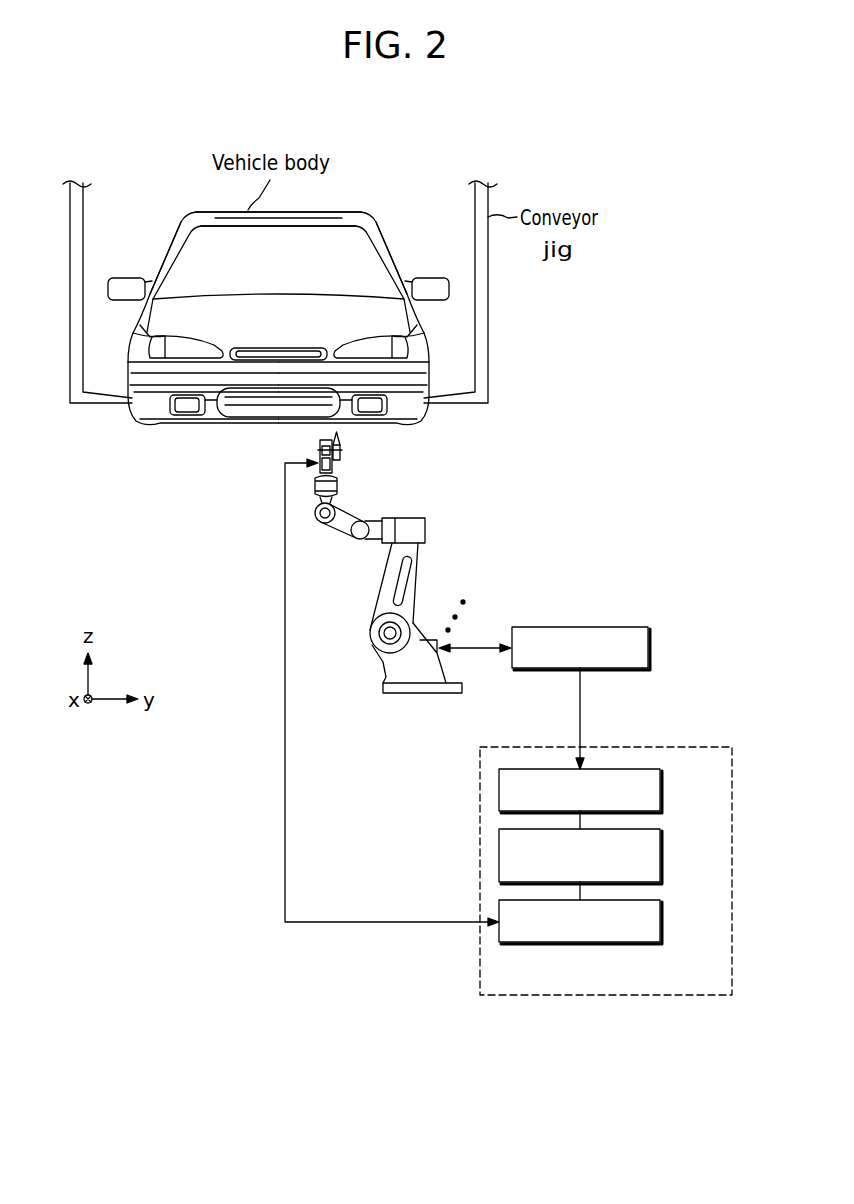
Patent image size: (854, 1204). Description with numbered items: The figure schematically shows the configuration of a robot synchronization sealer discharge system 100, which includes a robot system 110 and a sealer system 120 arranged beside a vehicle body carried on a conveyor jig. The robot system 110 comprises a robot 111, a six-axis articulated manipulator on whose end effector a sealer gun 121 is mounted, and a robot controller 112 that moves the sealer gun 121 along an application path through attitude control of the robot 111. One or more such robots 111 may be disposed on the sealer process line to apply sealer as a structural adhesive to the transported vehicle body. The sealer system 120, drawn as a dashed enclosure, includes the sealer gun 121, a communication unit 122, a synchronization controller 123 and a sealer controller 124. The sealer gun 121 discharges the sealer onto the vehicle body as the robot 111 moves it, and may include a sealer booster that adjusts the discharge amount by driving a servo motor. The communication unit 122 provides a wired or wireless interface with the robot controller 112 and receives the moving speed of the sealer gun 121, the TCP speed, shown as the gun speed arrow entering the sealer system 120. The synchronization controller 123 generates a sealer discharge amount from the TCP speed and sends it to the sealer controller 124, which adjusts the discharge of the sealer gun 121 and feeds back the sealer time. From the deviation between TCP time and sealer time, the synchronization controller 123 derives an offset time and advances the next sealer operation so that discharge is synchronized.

The robot synchronization sealer discharge system 100 is at (652, 493).
The robot system 110 is at (473, 490).
The robot 111 is at (427, 525).
The robot controller 112 is at (572, 627).
The sealer system 120 is at (603, 995).
The sealer gun 121 is at (343, 445).
The communication unit 122 is at (661, 791).
The synchronization controller 123 is at (661, 858).
The sealer controller 124 is at (661, 921).